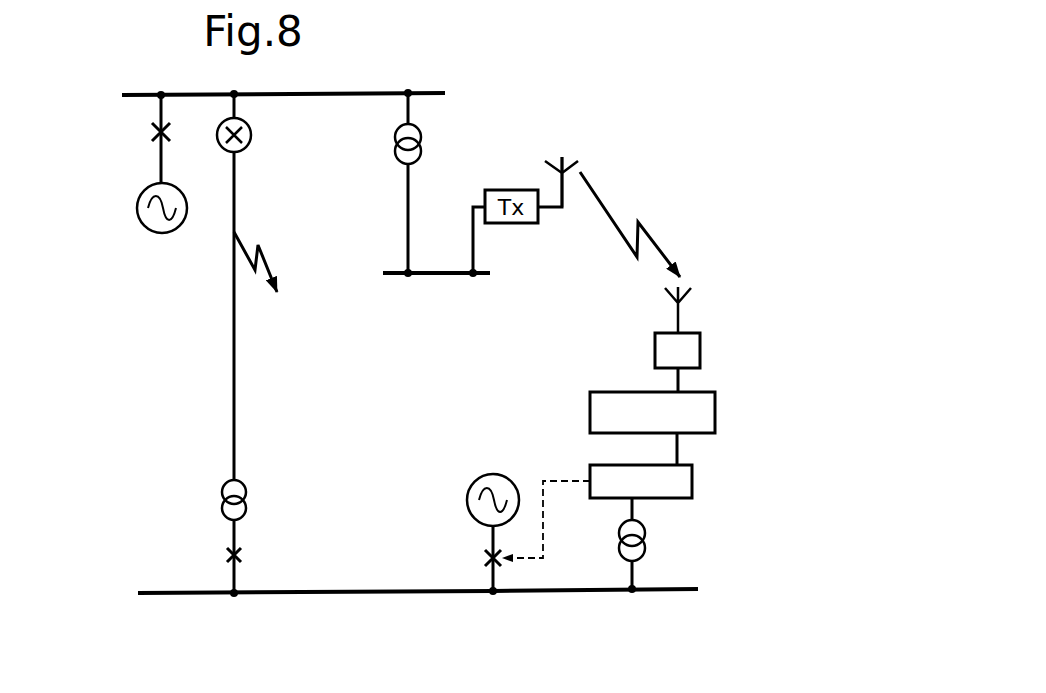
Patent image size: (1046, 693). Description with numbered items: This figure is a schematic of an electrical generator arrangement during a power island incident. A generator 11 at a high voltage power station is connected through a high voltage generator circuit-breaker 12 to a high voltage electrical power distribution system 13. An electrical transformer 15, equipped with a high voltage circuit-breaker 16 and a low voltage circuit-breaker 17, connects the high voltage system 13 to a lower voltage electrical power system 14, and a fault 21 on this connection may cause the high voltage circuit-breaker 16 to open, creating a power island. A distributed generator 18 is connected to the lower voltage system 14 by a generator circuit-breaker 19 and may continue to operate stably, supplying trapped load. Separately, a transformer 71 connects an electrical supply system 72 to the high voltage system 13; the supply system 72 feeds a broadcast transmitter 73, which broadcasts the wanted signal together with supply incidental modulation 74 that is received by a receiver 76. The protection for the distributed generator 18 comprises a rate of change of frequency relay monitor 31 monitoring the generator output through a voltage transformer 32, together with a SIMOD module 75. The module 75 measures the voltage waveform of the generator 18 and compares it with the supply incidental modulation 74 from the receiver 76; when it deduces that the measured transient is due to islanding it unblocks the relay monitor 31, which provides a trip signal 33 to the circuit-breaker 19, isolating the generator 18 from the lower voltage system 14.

The generator 11 is at (137, 205).
The high voltage generator circuit-breaker 12 is at (152, 132).
The high voltage electrical power distribution system 13 is at (142, 92).
The lower voltage electrical power system 14 is at (150, 591).
The electrical transformer 15 is at (222, 489).
The high voltage circuit-breaker 16 is at (252, 141).
The low voltage circuit-breaker 17 is at (245, 557).
The distributed generator 18 is at (489, 474).
The generator circuit-breaker 19 is at (485, 557).
The fault 21 is at (269, 296).
The rate of change of frequency relay monitor 31 is at (601, 465).
The voltage transformer 32 is at (645, 530).
The trip signal 33 is at (545, 528).
The transformer 71 is at (431, 140).
The electrical supply system 72 is at (448, 278).
The broadcast transmitter 73 is at (572, 150).
The supply incidental modulation 74 is at (611, 202).
The SIMOD module 75 is at (610, 392).
The receiver 76 is at (672, 322).